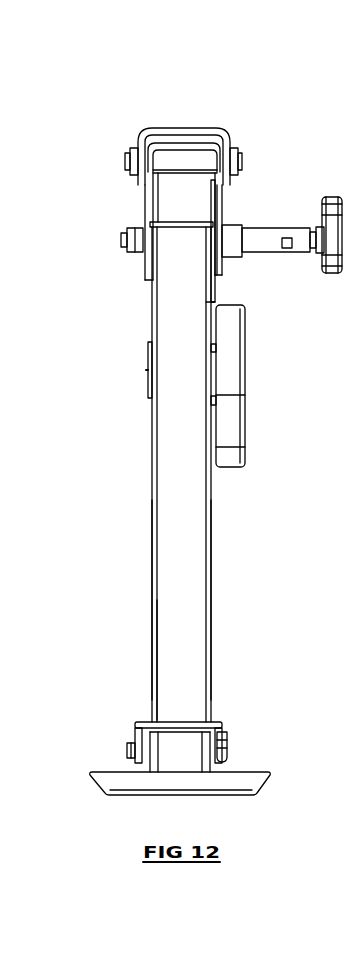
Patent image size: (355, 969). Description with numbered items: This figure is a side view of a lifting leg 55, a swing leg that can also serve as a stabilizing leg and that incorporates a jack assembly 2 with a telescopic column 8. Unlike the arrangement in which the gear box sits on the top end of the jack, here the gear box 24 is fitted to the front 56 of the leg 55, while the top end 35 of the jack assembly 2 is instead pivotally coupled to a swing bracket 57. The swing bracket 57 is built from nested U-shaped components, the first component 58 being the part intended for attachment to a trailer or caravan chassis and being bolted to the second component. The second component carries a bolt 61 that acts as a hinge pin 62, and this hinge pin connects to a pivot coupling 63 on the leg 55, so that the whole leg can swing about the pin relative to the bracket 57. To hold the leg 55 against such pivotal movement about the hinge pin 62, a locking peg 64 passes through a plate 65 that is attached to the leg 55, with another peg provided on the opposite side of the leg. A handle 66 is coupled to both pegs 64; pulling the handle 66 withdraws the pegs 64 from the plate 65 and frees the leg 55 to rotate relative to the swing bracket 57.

The jack assembly 2 is at (151, 505).
The telescopic column 8 is at (163, 683).
The gear box 24 is at (247, 453).
The top end 35 is at (172, 261).
The lifting leg 55 is at (151, 597).
The front 56 is at (212, 591).
The swing bracket 57 is at (173, 117).
The first U-shaped component 58 is at (82, 188).
The bolt 61 is at (123, 241).
The hinge pin 62 is at (143, 229).
The pivot coupling 63 is at (185, 236).
The locking peg 64 is at (207, 239).
The plate 65 is at (218, 293).
The handle 66 is at (322, 204).